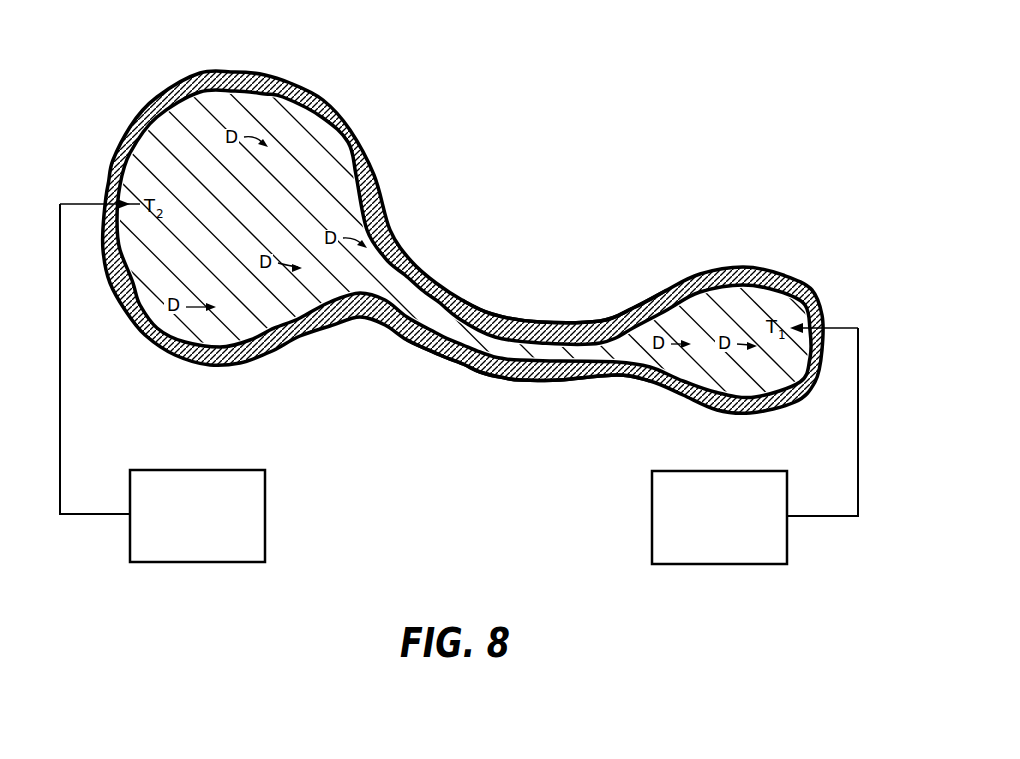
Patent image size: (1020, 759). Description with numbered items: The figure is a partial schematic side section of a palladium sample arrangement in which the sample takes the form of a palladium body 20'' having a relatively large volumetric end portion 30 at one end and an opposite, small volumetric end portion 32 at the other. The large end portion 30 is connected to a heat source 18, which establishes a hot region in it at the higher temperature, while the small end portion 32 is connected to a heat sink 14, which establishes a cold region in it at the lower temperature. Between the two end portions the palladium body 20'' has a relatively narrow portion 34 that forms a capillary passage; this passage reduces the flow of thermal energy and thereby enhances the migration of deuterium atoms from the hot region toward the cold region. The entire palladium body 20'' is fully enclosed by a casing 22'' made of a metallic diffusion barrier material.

The large volumetric end portion 30 is at (205, 180).
The small volumetric end portion 32 is at (732, 303).
The palladium body 20'' is at (463, 242).
The casing 22'' is at (456, 240).
The narrow portion 34 is at (470, 368).
The heat source 18 is at (247, 517).
The heat sink 14 is at (673, 518).